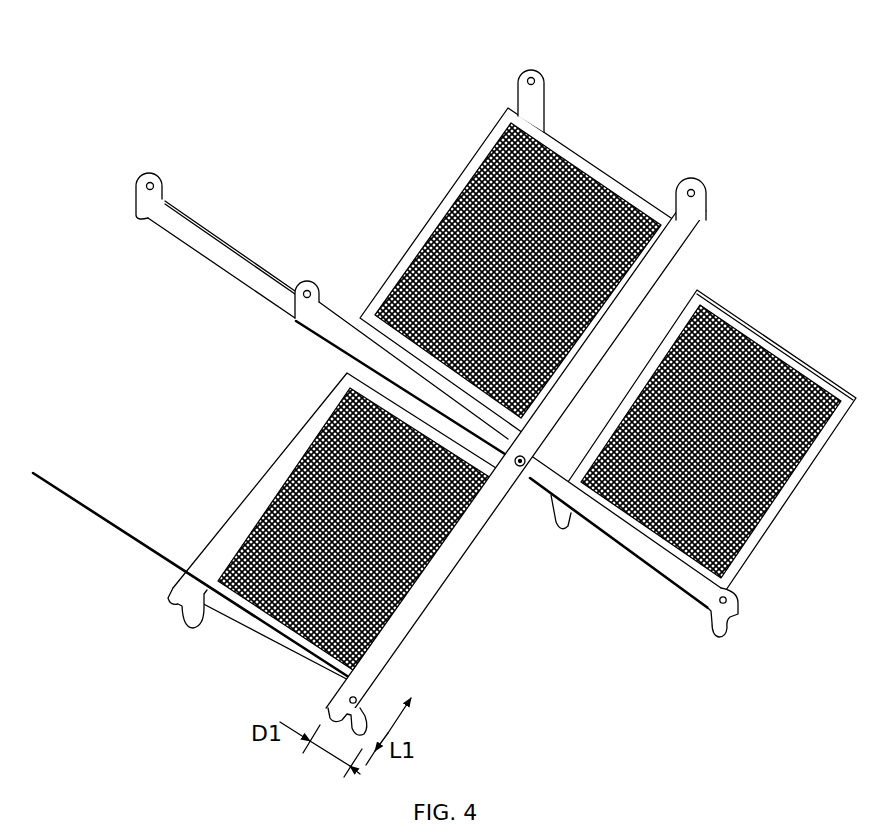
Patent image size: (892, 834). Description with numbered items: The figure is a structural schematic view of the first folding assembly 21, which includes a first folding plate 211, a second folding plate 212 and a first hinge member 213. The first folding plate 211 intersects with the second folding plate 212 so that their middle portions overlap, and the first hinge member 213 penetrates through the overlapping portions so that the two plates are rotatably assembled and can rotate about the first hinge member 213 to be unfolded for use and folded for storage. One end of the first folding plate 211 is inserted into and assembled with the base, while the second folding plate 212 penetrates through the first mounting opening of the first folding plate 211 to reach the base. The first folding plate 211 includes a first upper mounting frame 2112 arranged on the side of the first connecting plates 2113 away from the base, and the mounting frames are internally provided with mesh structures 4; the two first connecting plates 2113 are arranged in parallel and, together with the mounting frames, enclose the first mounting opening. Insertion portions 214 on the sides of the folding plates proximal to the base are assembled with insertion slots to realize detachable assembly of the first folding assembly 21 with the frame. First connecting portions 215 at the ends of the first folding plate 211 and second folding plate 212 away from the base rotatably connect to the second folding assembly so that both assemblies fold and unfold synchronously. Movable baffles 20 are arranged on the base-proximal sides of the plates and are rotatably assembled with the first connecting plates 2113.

The mesh structures 4 is at (447, 205).
The movable baffles 20 is at (772, 338).
The first folding assembly 21 is at (667, 233).
The first folding plate 211 is at (263, 467).
The first upper mounting frame 2112 is at (540, 128).
The first connecting plates 2113 is at (446, 585).
The second folding plate 212 is at (645, 548).
The first hinge member 213 is at (516, 462).
The insertion portions 214 is at (190, 617).
The first connecting portions 215 is at (528, 58).